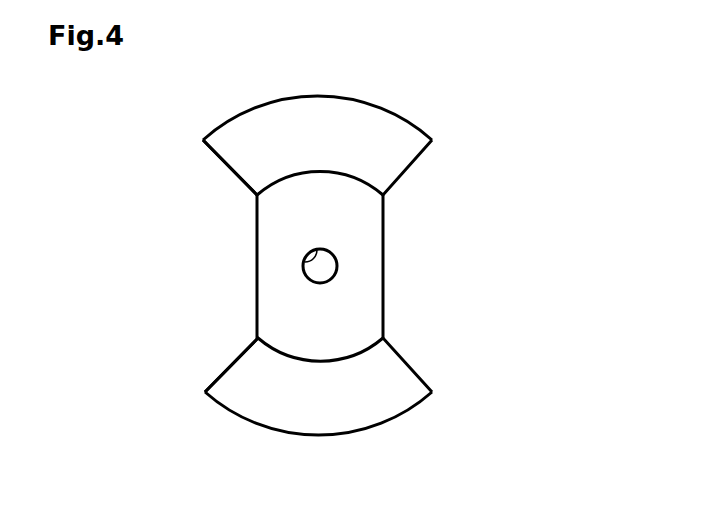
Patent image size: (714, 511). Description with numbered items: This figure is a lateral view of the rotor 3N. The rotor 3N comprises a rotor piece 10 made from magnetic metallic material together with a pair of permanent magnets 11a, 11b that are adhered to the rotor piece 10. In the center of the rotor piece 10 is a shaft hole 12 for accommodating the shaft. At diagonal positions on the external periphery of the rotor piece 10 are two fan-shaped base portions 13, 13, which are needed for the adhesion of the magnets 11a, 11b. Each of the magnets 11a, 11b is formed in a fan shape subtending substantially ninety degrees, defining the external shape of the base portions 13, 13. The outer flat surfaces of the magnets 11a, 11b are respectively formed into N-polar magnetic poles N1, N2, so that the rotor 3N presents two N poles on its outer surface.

The rotor piece 10 is at (383, 272).
The permanent magnet 11a is at (408, 170).
The permanent magnet 11b is at (415, 370).
The shaft hole 12 is at (303, 268).
The fan-shaped base portion 13 is at (233, 170).
The N-polar magnetic pole N1 is at (382, 103).
The N-polar magnetic pole N2 is at (385, 430).
The rotor 3N is at (547, 193).